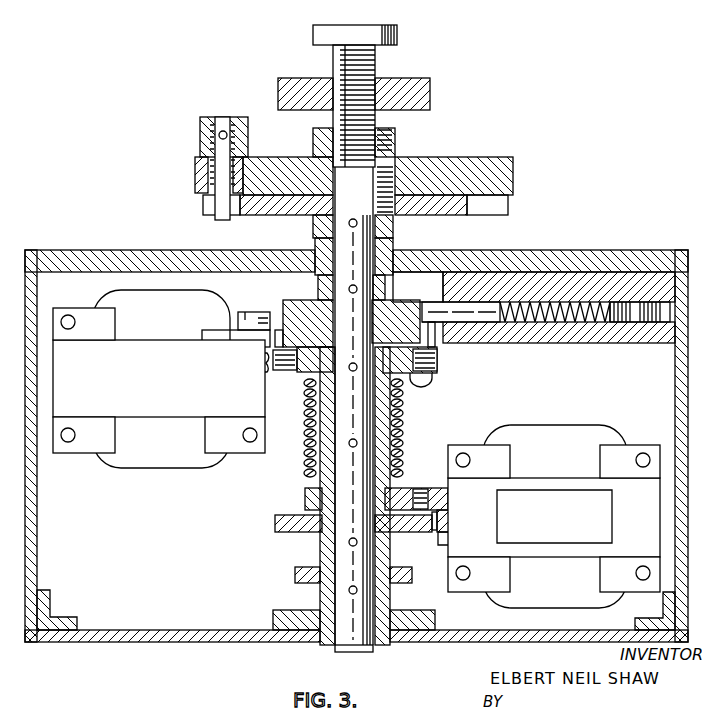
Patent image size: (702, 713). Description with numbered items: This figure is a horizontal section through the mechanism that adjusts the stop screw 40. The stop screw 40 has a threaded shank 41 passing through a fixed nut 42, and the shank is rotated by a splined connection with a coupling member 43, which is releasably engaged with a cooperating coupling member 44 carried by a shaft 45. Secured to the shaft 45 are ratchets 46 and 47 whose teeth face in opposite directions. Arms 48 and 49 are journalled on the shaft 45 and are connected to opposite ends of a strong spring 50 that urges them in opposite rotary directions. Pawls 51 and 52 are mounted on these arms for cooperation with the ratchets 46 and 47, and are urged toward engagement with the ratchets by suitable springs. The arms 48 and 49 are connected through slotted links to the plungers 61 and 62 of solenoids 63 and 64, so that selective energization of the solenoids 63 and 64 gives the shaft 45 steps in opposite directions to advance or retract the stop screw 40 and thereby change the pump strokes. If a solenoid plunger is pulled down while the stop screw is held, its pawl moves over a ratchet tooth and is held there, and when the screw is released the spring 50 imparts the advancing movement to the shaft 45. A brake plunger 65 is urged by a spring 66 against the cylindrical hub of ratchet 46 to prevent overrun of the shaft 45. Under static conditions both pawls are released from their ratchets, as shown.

The stop screw 40 is at (330, 25).
The threaded shank 41 is at (344, 68).
The fixed nut 42 is at (406, 80).
The coupling member 43 is at (452, 157).
The cooperating coupling member 44 is at (458, 216).
The shaft 45 is at (362, 422).
The ratchet 46 is at (438, 343).
The ratchet 47 is at (295, 530).
The arm 48 is at (212, 367).
The arm 49 is at (525, 490).
The spring 50 is at (400, 460).
The pawl 51 is at (214, 337).
The pawl 52 is at (490, 532).
The plunger 61 is at (134, 378).
The plunger 62 is at (573, 517).
The solenoid 63 is at (148, 463).
The solenoid 64 is at (595, 434).
The brake plunger 65 is at (438, 308).
The spring 66 is at (563, 318).